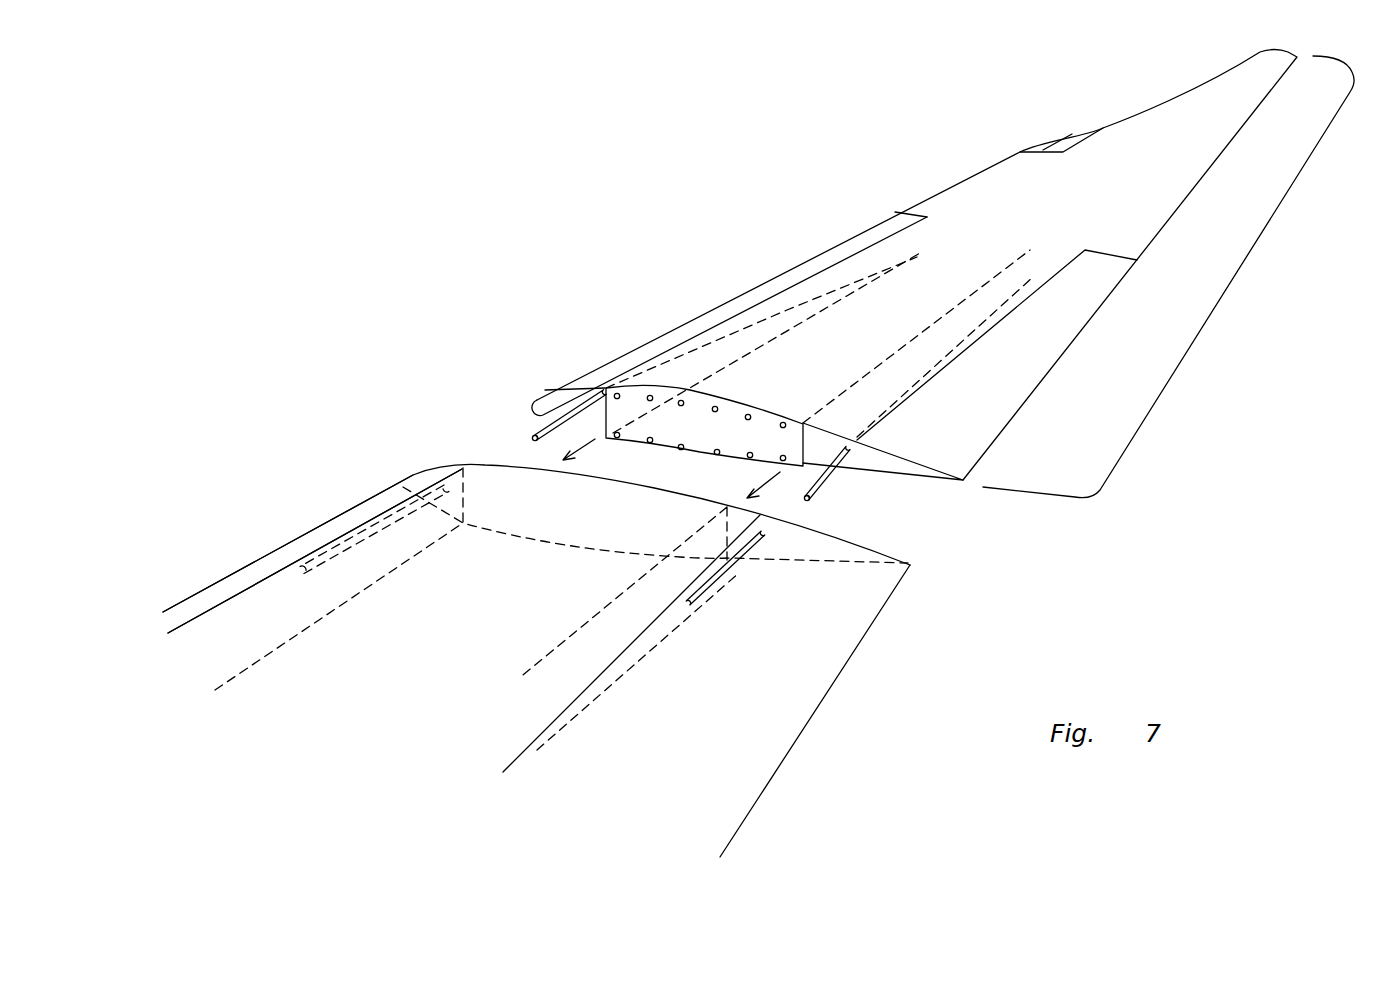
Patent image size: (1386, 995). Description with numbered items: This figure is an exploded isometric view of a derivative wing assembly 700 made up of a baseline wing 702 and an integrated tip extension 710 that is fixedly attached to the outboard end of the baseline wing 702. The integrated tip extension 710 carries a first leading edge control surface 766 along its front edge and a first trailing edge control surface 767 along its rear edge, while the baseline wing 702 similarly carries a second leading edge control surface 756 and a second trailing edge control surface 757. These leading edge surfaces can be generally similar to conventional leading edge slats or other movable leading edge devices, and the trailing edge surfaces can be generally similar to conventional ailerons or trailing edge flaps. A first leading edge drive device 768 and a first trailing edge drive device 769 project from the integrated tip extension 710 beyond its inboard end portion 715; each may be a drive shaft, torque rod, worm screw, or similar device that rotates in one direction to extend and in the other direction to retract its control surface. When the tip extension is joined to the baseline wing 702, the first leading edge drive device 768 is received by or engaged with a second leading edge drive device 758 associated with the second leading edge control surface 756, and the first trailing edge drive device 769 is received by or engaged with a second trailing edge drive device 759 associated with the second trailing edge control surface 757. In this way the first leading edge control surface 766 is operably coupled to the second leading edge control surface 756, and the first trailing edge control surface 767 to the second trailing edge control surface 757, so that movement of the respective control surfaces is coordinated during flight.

The derivative wing assembly 700 is at (383, 190).
The baseline wing 702 is at (489, 607).
The integrated tip extension 710 is at (1187, 352).
The inboard end portion 715 is at (703, 430).
The second leading edge control surface 756 is at (260, 567).
The second trailing edge control surface 757 is at (767, 727).
The second leading edge drive device 758 is at (390, 512).
The second trailing edge drive device 759 is at (730, 567).
The first leading edge control surface 766 is at (625, 356).
The first trailing edge control surface 767 is at (1000, 395).
The first leading edge drive device 768 is at (530, 433).
The first trailing edge drive device 769 is at (838, 495).